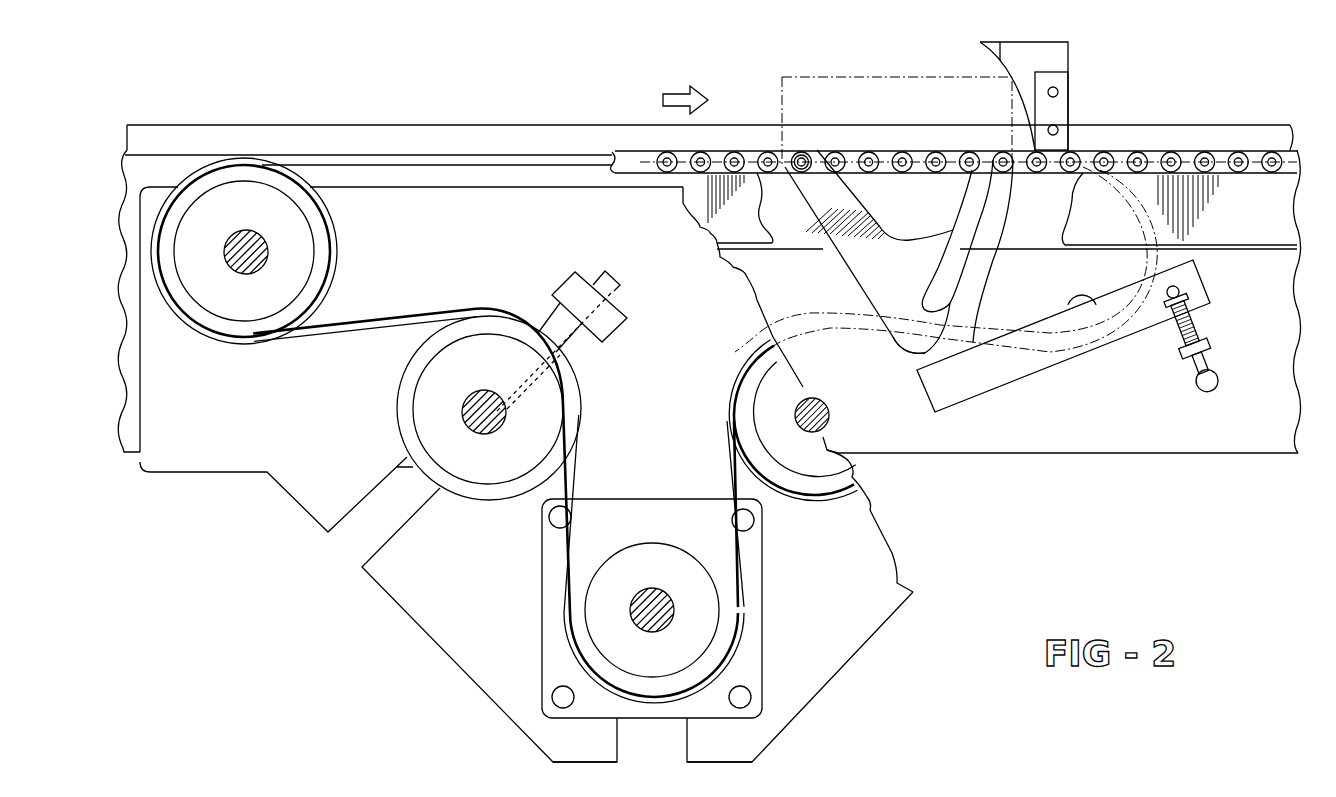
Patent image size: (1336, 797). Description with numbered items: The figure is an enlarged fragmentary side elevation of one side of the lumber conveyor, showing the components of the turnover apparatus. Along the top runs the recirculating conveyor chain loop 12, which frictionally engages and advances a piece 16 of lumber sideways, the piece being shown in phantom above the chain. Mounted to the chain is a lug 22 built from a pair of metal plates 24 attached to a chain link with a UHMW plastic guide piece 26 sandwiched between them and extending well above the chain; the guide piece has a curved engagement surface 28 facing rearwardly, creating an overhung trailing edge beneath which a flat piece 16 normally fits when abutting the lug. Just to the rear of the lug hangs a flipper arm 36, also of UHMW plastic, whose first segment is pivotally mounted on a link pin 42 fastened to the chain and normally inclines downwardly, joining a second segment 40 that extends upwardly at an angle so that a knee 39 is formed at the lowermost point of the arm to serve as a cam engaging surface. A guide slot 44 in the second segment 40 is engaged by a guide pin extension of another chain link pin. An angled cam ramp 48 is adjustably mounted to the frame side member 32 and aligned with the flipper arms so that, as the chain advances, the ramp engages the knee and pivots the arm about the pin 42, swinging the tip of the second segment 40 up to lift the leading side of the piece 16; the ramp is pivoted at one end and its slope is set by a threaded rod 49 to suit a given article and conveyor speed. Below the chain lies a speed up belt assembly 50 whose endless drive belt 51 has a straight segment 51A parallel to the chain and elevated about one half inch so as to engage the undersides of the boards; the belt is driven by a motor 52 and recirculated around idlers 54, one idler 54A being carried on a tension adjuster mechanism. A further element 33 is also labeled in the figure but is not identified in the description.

The conveyor chain loop 12 is at (752, 153).
The piece of lumber 16 is at (913, 77).
The lug 22 is at (1038, 80).
The metal plate 24 is at (1063, 110).
The guide piece 26 is at (1020, 45).
The curved engagement surface 28 is at (993, 62).
The frame side member 32 is at (1207, 401).
The chain guide 33 is at (800, 193).
The flipper arm 36 is at (858, 227).
The knee 39 is at (913, 357).
The second segment 40 is at (1000, 152).
The link pin 42 is at (801, 152).
The guide slot 44 is at (943, 288).
The angled cam ramp 48 is at (1097, 297).
The threaded rod 49 is at (1211, 355).
The speed up belt assembly 50 is at (352, 600).
The endless drive belt 51 is at (298, 342).
The straight segment 51A is at (440, 157).
The motor 52 is at (597, 611).
The idler 54 is at (234, 178).
The idler 54A is at (393, 393).